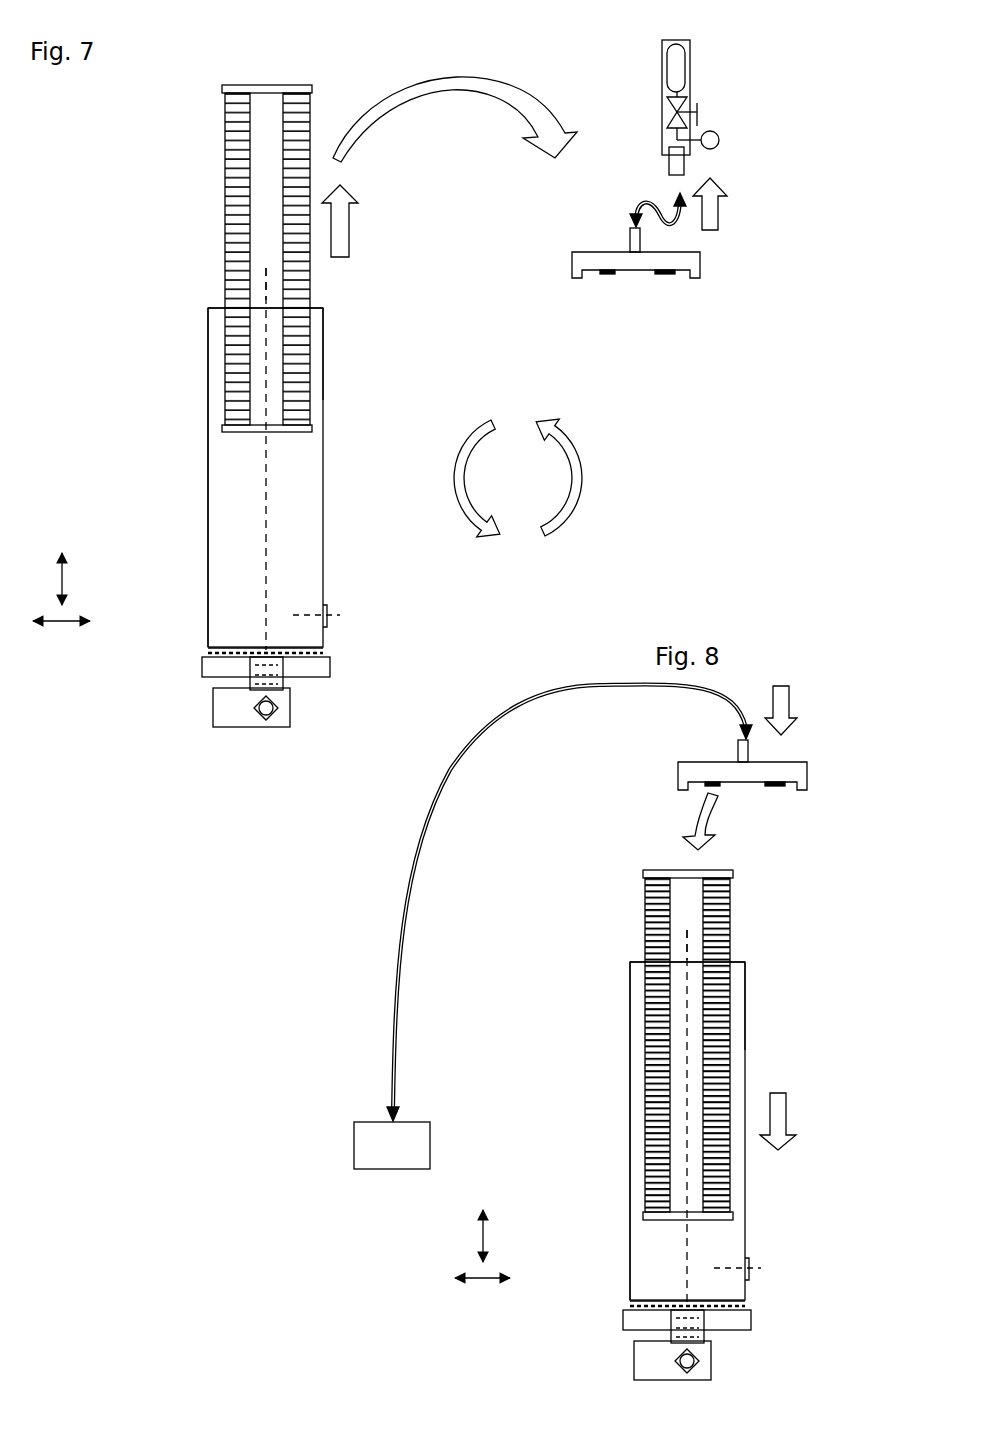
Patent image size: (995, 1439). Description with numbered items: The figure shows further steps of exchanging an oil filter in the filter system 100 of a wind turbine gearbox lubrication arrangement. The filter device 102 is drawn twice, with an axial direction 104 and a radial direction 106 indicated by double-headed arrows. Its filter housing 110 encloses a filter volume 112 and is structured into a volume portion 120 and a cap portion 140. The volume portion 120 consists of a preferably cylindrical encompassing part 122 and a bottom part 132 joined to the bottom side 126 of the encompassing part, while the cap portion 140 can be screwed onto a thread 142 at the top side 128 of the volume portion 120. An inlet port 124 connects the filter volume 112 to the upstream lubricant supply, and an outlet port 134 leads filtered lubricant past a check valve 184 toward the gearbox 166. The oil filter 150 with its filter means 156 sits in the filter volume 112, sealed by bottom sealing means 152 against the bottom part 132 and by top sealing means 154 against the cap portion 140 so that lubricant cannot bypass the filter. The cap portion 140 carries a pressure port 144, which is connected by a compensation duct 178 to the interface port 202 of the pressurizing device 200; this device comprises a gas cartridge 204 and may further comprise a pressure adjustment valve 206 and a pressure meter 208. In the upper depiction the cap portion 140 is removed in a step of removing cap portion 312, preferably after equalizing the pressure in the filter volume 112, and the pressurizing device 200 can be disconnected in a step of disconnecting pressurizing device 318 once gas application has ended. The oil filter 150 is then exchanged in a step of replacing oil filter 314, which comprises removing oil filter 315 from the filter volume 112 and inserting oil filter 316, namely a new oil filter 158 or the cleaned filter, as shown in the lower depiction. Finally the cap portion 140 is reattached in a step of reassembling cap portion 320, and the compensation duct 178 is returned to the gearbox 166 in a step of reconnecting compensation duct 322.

In FIG. 7, the filter system 100 is at (124, 163).
In FIG. 8, the filter system 100 is at (547, 814).
In FIG. 7, the filter device 102 is at (180, 540).
In FIG. 8, the filter device 102 is at (600, 1192).
In FIG. 7, the axial direction 104 is at (62, 580).
In FIG. 8, the axial direction 104 is at (484, 1236).
In FIG. 7, the radial direction 106 is at (62, 628).
In FIG. 8, the radial direction 106 is at (483, 1284).
In FIG. 7, the filter housing 110 is at (150, 356).
In FIG. 8, the filter housing 110 is at (571, 1008).
In FIG. 7, the filter volume 112 is at (325, 386).
In FIG. 8, the filter volume 112 is at (747, 1043).
In FIG. 7, the volume portion 120 is at (207, 495).
In FIG. 8, the volume portion 120 is at (629, 1148).
In FIG. 7, the encompassing part 122 is at (208, 468).
In FIG. 8, the encompassing part 122 is at (630, 1120).
In FIG. 7, the inlet port 124 is at (326, 615).
In FIG. 8, the inlet port 124 is at (748, 1268).
In FIG. 7, the bottom side 126 is at (207, 622).
In FIG. 8, the bottom side 126 is at (629, 1275).
In FIG. 7, the top side 128 is at (207, 330).
In FIG. 8, the top side 128 is at (629, 982).
In FIG. 7, the bottom part 132 is at (202, 667).
In FIG. 8, the bottom part 132 is at (623, 1320).
In FIG. 7, the outlet port 134 is at (283, 680).
In FIG. 8, the outlet port 134 is at (705, 1333).
In FIG. 7, the cap portion 140 is at (574, 258).
In FIG. 8, the cap portion 140 is at (680, 766).
In FIG. 7, the thread 142 is at (323, 310).
In FIG. 8, the thread 142 is at (746, 964).
In FIG. 7, the pressure port 144 is at (642, 246).
In FIG. 8, the pressure port 144 is at (749, 758).
In FIG. 7, the oil filter 150 is at (222, 246).
In FIG. 7, the bottom sealing means 152 is at (300, 665).
In FIG. 8, the bottom sealing means 152 is at (720, 1318).
In FIG. 7, the top sealing means 154 is at (668, 276).
In FIG. 8, the top sealing means 154 is at (771, 787).
In FIG. 7, the filter means 156 is at (288, 268).
In FIG. 8, the filter means 156 is at (733, 932).
In FIG. 8, the new oil filter 158 is at (645, 904).
In FIG. 8, the gearbox 166 is at (408, 1160).
In FIG. 7, the compensation duct 178 is at (635, 212).
In FIG. 8, the compensation duct 178 is at (424, 862).
In FIG. 7, the check valve 184 is at (213, 700).
In FIG. 8, the check valve 184 is at (634, 1355).
In FIG. 7, the pressurizing device 200 is at (781, 58).
In FIG. 7, the interface port 202 is at (685, 165).
In FIG. 7, the gas cartridge 204 is at (680, 78).
In FIG. 7, the pressure adjustment valve 206 is at (697, 115).
In FIG. 7, the pressure meter 208 is at (720, 139).
In FIG. 7, the removing cap portion 312 is at (452, 85).
In FIG. 7, the replacing oil filter 314 is at (540, 486).
In FIG. 7, the removing oil filter 315 is at (340, 228).
In FIG. 8, the inserting oil filter 316 is at (787, 1118).
In FIG. 7, the disconnecting pressurizing device 318 is at (712, 208).
In FIG. 8, the reassembling cap portion 320 is at (700, 813).
In FIG. 8, the reconnecting compensation duct 322 is at (790, 703).